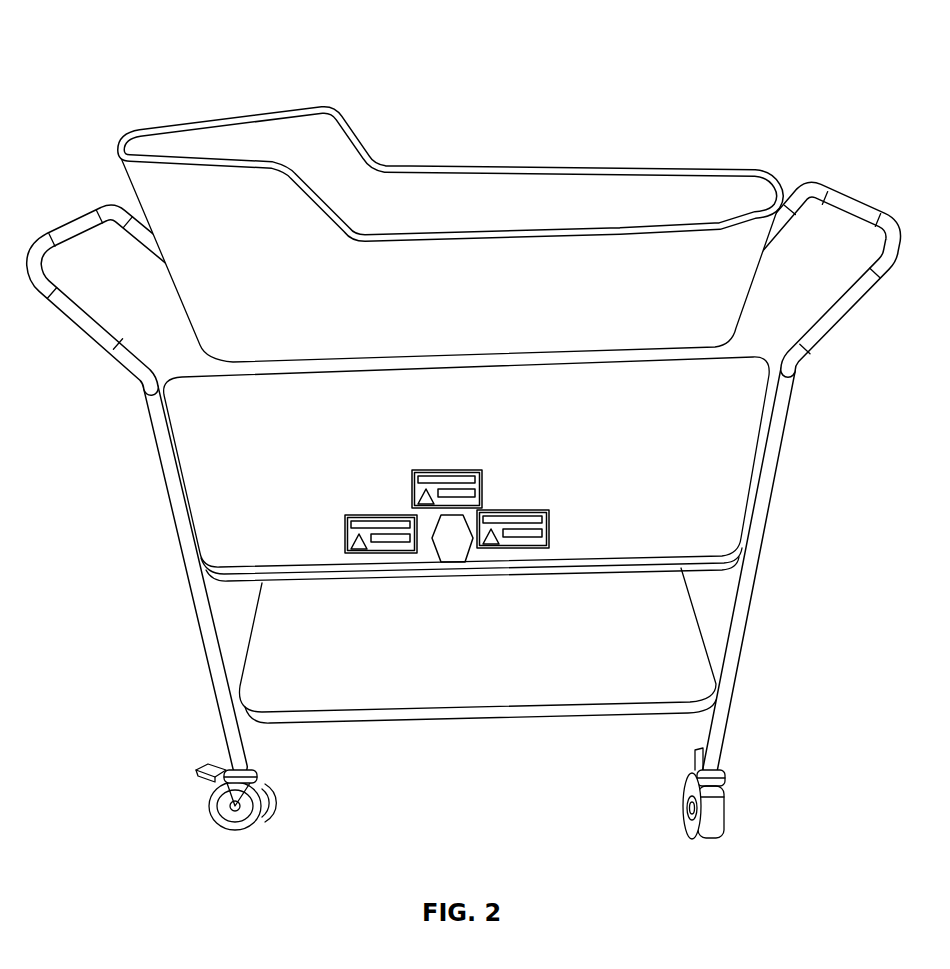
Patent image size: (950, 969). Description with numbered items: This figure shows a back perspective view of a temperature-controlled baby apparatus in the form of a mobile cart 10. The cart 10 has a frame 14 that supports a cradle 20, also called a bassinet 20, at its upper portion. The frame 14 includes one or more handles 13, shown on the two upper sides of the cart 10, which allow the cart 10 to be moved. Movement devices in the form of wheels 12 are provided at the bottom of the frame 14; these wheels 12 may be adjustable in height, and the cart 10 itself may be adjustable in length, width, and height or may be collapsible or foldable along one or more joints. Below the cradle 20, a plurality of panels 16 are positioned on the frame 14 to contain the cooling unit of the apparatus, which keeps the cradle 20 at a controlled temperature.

The cart 10 is at (472, 430).
The wheels 12 is at (740, 802).
The handles 13 is at (85, 203).
The frame 14 is at (810, 479).
The panels 16 is at (238, 483).
The cradle 20 is at (570, 165).